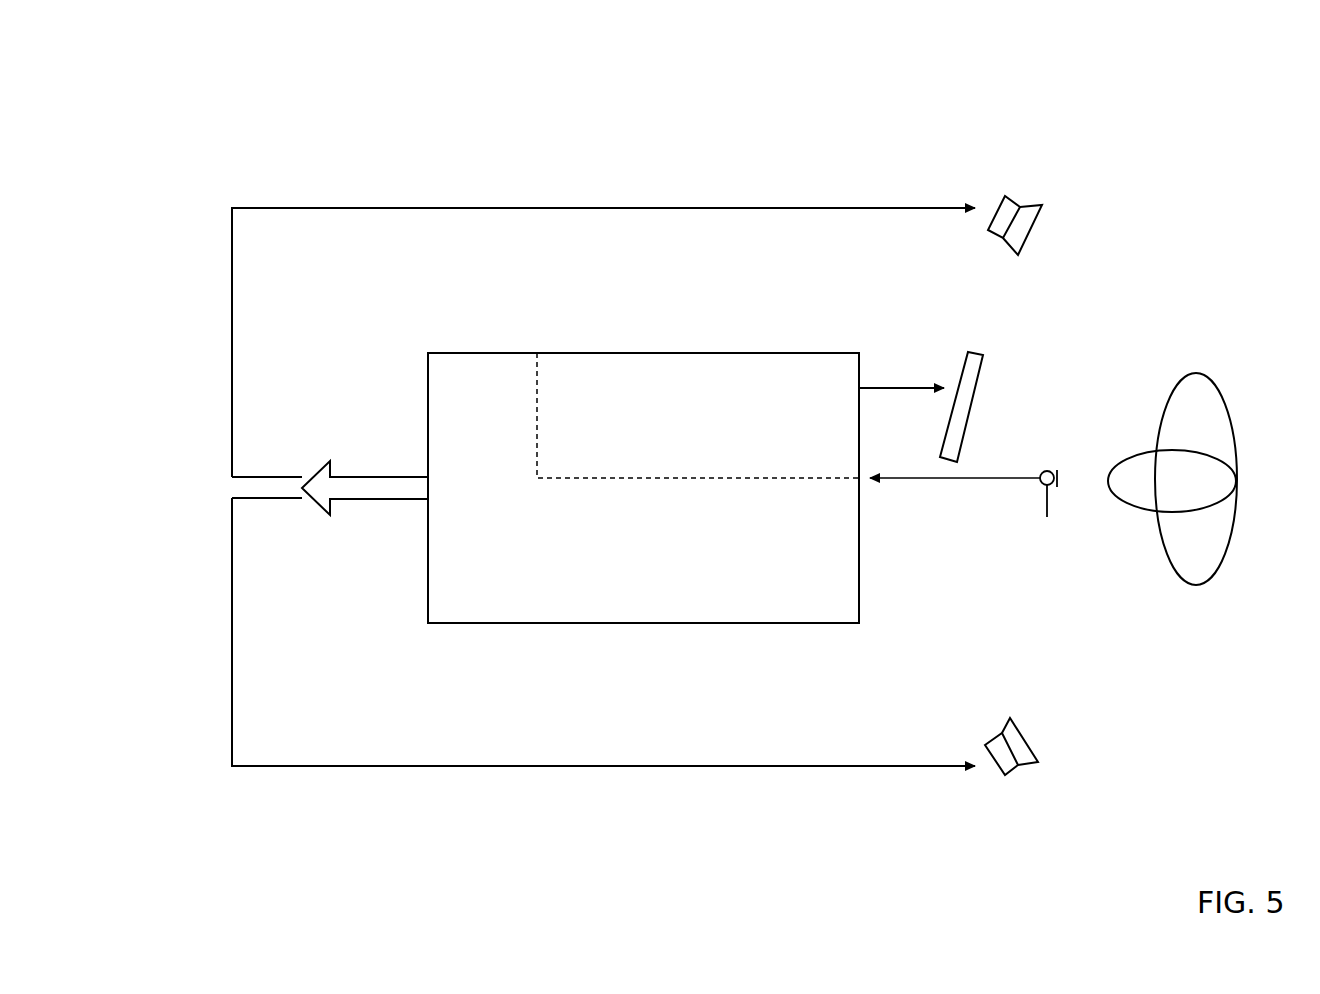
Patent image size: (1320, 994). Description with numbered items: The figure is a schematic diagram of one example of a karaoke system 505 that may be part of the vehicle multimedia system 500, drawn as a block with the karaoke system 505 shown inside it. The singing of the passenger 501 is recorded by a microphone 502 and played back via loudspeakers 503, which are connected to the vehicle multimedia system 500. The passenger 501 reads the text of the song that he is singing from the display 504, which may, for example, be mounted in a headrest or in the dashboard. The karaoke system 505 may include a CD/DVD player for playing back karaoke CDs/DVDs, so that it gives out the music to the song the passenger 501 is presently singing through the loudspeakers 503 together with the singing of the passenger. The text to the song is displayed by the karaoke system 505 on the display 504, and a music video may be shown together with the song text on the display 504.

The vehicle multimedia system 500 is at (185, 120).
The passenger 501 is at (1220, 393).
The microphone 502 is at (970, 514).
The loudspeakers 503 is at (1035, 220).
The display 504 is at (983, 367).
The karaoke system 505 is at (698, 415).